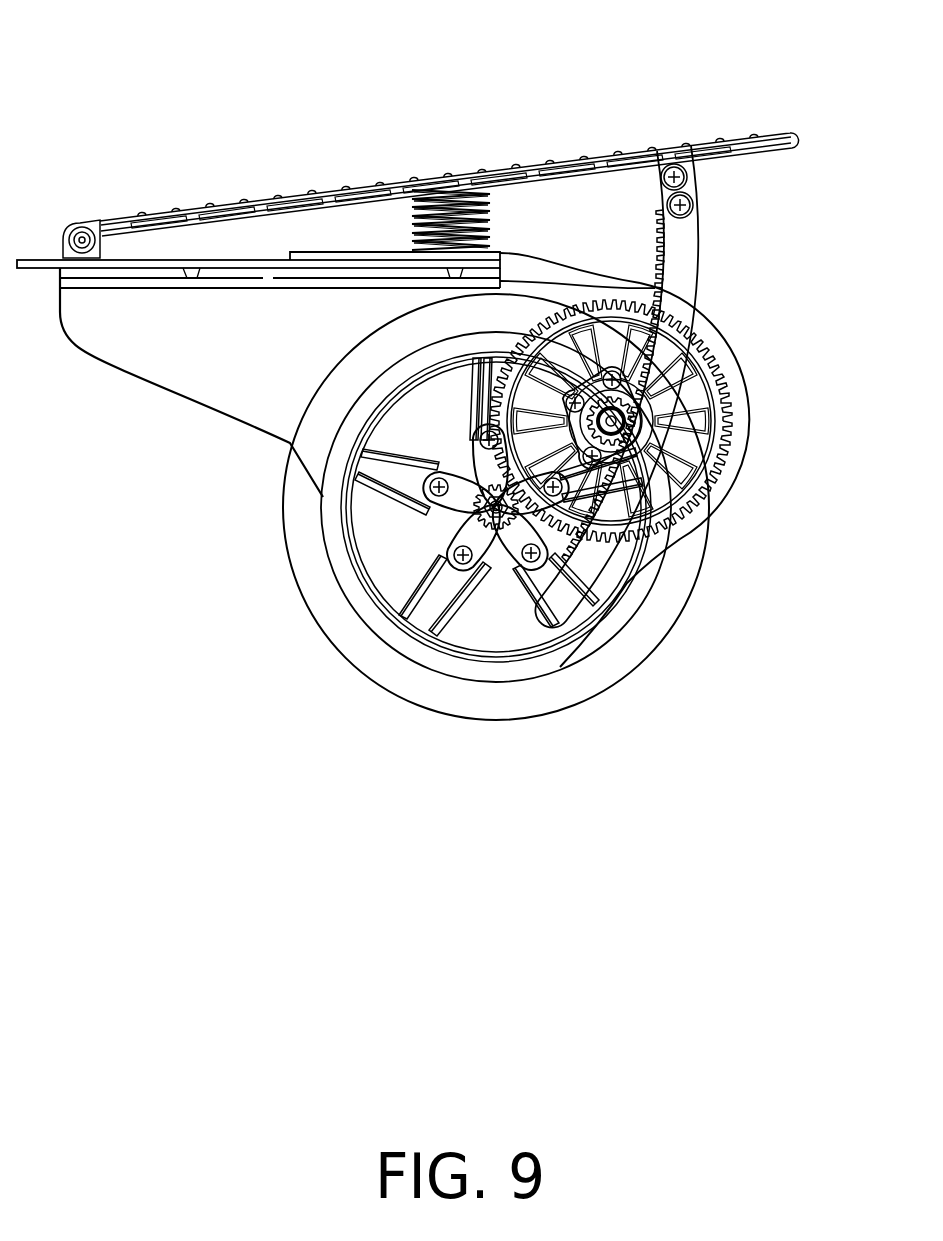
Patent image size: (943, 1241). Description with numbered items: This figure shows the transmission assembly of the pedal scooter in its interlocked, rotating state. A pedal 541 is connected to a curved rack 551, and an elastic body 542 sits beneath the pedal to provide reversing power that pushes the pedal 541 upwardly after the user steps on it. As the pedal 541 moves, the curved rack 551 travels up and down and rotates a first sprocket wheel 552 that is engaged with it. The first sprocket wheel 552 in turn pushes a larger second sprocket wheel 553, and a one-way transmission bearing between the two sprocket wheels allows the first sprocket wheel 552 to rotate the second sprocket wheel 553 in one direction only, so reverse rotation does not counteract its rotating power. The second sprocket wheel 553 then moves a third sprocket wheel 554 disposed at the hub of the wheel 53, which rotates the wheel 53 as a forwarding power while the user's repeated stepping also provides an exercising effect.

The wheel 53 is at (647, 625).
The pedal 541 is at (265, 200).
The elastic body 542 is at (490, 200).
The curved rack 551 is at (684, 282).
The first sprocket wheel 552 is at (622, 437).
The second sprocket wheel 553 is at (727, 418).
The third sprocket wheel 554 is at (497, 525).